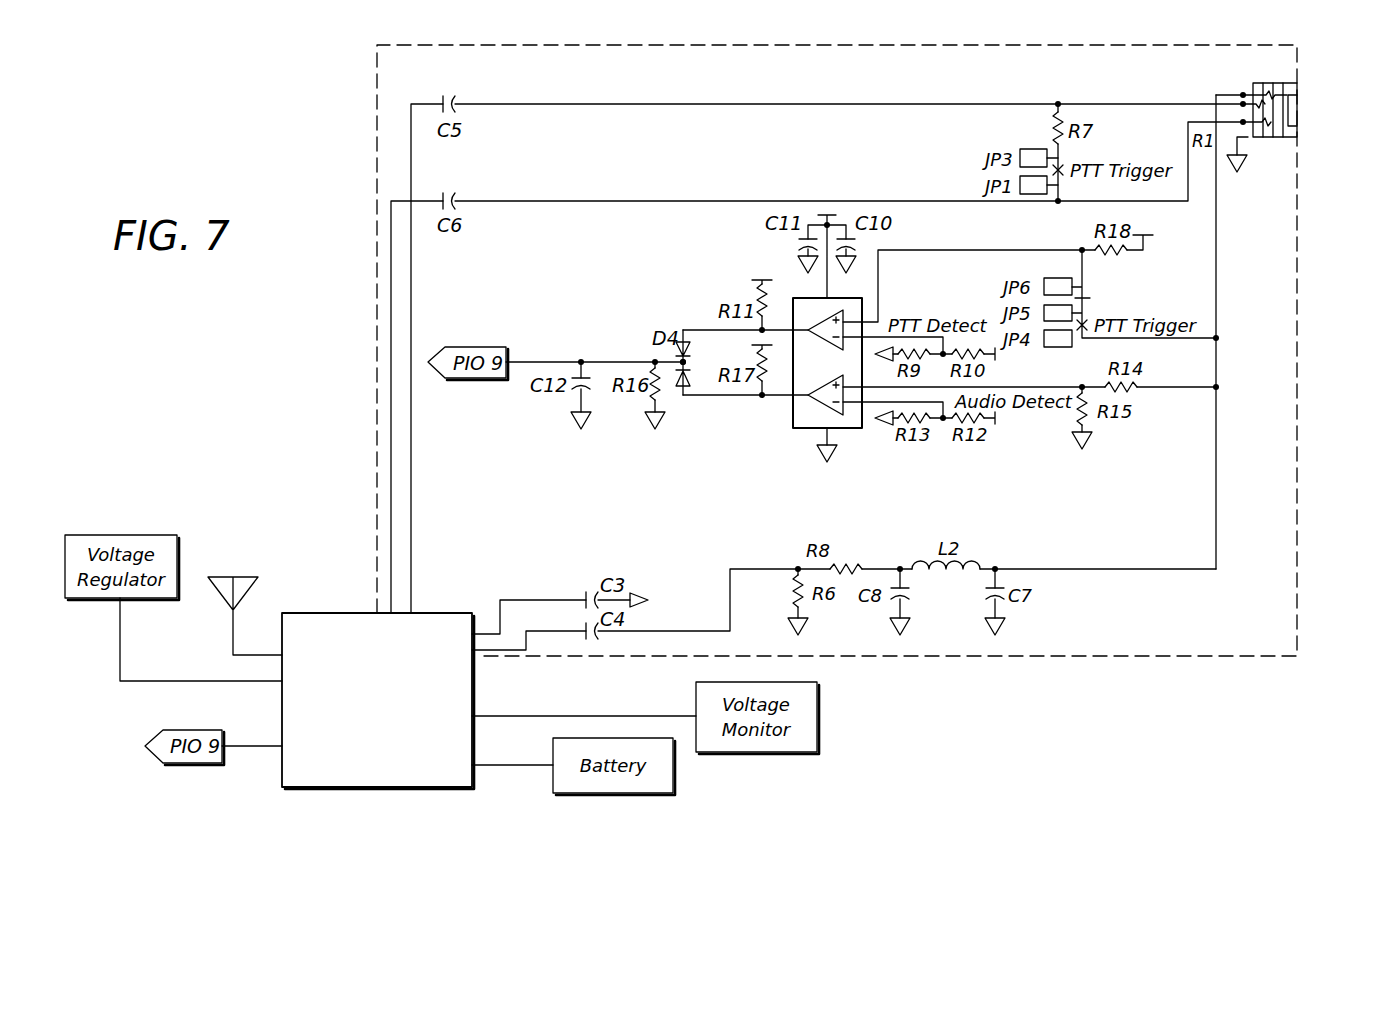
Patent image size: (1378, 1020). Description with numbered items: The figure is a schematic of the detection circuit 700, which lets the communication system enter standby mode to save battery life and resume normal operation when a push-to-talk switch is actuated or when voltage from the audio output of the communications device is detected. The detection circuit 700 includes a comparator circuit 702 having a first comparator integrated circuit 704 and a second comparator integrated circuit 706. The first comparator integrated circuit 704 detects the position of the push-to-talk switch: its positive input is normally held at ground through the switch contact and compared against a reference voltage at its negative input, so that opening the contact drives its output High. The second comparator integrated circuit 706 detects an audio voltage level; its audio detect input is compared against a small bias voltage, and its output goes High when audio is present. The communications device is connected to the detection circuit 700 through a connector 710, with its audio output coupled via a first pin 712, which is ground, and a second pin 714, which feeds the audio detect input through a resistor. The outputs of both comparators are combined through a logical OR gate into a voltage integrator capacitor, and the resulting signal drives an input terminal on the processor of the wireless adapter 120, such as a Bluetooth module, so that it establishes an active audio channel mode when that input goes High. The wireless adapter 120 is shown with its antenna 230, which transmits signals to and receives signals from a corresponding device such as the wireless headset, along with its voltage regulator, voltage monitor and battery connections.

The detection circuit 700 is at (276, 398).
The comparator circuit 702 is at (853, 430).
The first comparator integrated circuit 704 is at (832, 320).
The second comparator integrated circuit 706 is at (825, 398).
The connector 710 is at (1294, 108).
The first pin (ground) 712 is at (1247, 137).
The second pin 714 is at (1252, 95).
The wireless adapter 120 is at (390, 788).
The antenna 230 is at (247, 577).